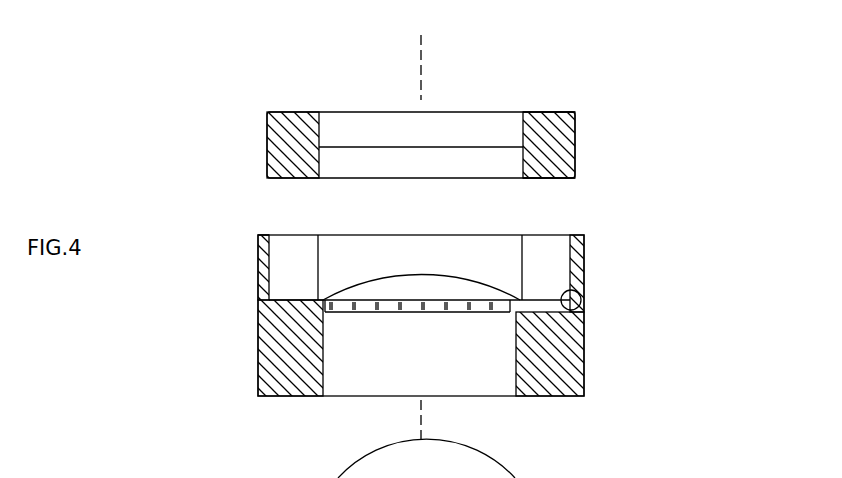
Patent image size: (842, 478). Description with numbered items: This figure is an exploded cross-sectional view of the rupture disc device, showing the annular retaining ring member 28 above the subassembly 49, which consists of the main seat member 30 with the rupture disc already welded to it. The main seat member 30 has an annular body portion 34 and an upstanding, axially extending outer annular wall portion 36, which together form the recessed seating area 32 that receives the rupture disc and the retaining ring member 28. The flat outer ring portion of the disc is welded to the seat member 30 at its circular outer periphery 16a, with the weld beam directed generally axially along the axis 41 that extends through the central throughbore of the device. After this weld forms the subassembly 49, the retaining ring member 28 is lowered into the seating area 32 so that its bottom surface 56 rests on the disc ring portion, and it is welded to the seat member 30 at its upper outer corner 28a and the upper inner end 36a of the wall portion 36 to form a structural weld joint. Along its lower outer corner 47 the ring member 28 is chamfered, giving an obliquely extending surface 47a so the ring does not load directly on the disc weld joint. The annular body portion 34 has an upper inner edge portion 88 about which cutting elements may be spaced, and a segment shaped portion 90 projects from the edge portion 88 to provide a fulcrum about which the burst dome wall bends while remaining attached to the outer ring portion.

The axis 41 is at (421, 66).
The retaining ring member 28 is at (628, 131).
The upper outer corner 28a is at (571, 113).
The bottom surface 56 is at (296, 179).
The lower outer corner 47 is at (572, 175).
The obliquely extending surface 47a is at (565, 179).
The main seat member 30 is at (607, 358).
The recessed seating area 32 is at (551, 249).
The outer annular wall portion 36 is at (258, 286).
The upper inner end 36a is at (276, 234).
The outer periphery 16a is at (272, 298).
The annular body portion 34 is at (266, 380).
The upper inner edge portion 88 is at (335, 312).
The segment shaped portion 90 is at (508, 312).
The subassembly 49 is at (699, 290).